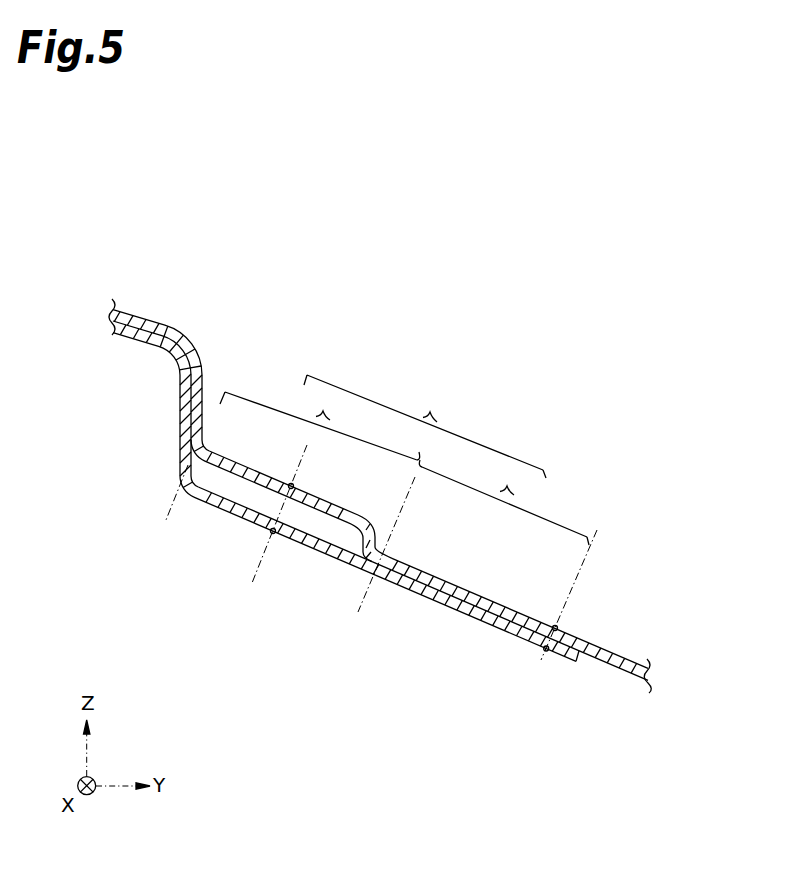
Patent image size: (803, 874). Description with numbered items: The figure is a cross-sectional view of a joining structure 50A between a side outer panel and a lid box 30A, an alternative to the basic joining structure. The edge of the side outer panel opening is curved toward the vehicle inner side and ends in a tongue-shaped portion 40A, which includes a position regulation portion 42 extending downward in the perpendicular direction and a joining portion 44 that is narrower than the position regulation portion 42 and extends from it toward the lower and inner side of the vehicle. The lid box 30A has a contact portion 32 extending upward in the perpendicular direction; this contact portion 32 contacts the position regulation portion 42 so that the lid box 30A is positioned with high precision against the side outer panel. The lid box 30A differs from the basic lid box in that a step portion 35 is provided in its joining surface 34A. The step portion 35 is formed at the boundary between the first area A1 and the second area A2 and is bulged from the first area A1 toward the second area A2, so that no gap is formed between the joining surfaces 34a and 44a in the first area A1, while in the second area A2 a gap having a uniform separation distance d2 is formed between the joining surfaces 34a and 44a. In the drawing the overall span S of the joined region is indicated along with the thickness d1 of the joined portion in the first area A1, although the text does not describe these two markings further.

The joining structure 50A is at (539, 300).
The lid box 30A is at (158, 314).
The contact portion 32 is at (203, 388).
The joining surface 34a is at (249, 491).
The joining surface 34A is at (484, 598).
The step portion 35 is at (378, 542).
The tongue-shaped portion 40A is at (178, 471).
The position regulation portion 42 is at (178, 396).
The joining surface 44a is at (247, 504).
The joining portion 44 is at (448, 602).
The thickness at joined portion d1 is at (567, 612).
The separation distance d2 is at (279, 517).
The first area A1 is at (504, 502).
The second area A2 is at (320, 425).
The span S is at (425, 426).